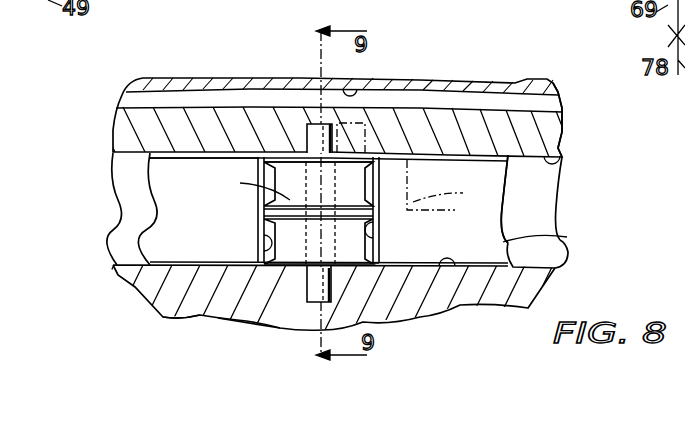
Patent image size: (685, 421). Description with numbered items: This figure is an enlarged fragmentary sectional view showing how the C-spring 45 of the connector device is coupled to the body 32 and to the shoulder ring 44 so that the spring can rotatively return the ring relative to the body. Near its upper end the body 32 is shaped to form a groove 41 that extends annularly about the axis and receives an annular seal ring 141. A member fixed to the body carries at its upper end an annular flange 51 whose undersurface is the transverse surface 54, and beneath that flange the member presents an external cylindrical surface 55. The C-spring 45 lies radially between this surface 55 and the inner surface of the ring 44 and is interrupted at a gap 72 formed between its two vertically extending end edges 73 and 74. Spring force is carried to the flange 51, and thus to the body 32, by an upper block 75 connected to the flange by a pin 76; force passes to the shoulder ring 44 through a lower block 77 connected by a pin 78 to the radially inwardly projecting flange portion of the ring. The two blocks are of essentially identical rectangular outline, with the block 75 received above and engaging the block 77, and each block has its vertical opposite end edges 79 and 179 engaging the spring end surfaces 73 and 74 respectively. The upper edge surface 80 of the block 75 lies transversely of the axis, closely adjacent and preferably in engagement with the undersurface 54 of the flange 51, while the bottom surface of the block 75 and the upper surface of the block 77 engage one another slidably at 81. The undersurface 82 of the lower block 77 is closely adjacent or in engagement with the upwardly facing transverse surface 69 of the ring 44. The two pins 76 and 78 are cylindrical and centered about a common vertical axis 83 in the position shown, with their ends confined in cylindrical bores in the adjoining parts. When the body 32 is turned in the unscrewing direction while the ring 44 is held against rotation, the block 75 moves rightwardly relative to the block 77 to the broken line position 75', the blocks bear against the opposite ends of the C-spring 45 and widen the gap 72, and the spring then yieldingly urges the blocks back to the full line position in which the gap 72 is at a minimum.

The body 32 is at (255, 78).
The groove 41 is at (373, 85).
The annular seal ring 141 is at (473, 103).
The pin 76 is at (308, 124).
The upper edge surface 80 is at (360, 143).
The annular flange 51 is at (553, 129).
The C-spring 45 is at (152, 202).
The external cylindrical surface 55 is at (552, 205).
The transverse surface 54 is at (565, 162).
The common vertical axis 83 is at (324, 205).
The block 75 is at (277, 114).
The end edge 73 is at (366, 229).
The end edge 74 is at (264, 168).
The sliding engagement 81 is at (290, 205).
The end edge 79 is at (262, 210).
The end edge 179 is at (407, 170).
The broken line position of block 75' is at (456, 192).
The shoulder ring 44 is at (123, 285).
The gap 72 is at (198, 317).
The block 77 is at (240, 320).
The pin 78 is at (318, 290).
The undersurface 82 is at (360, 268).
The transverse surface 69 is at (447, 268).